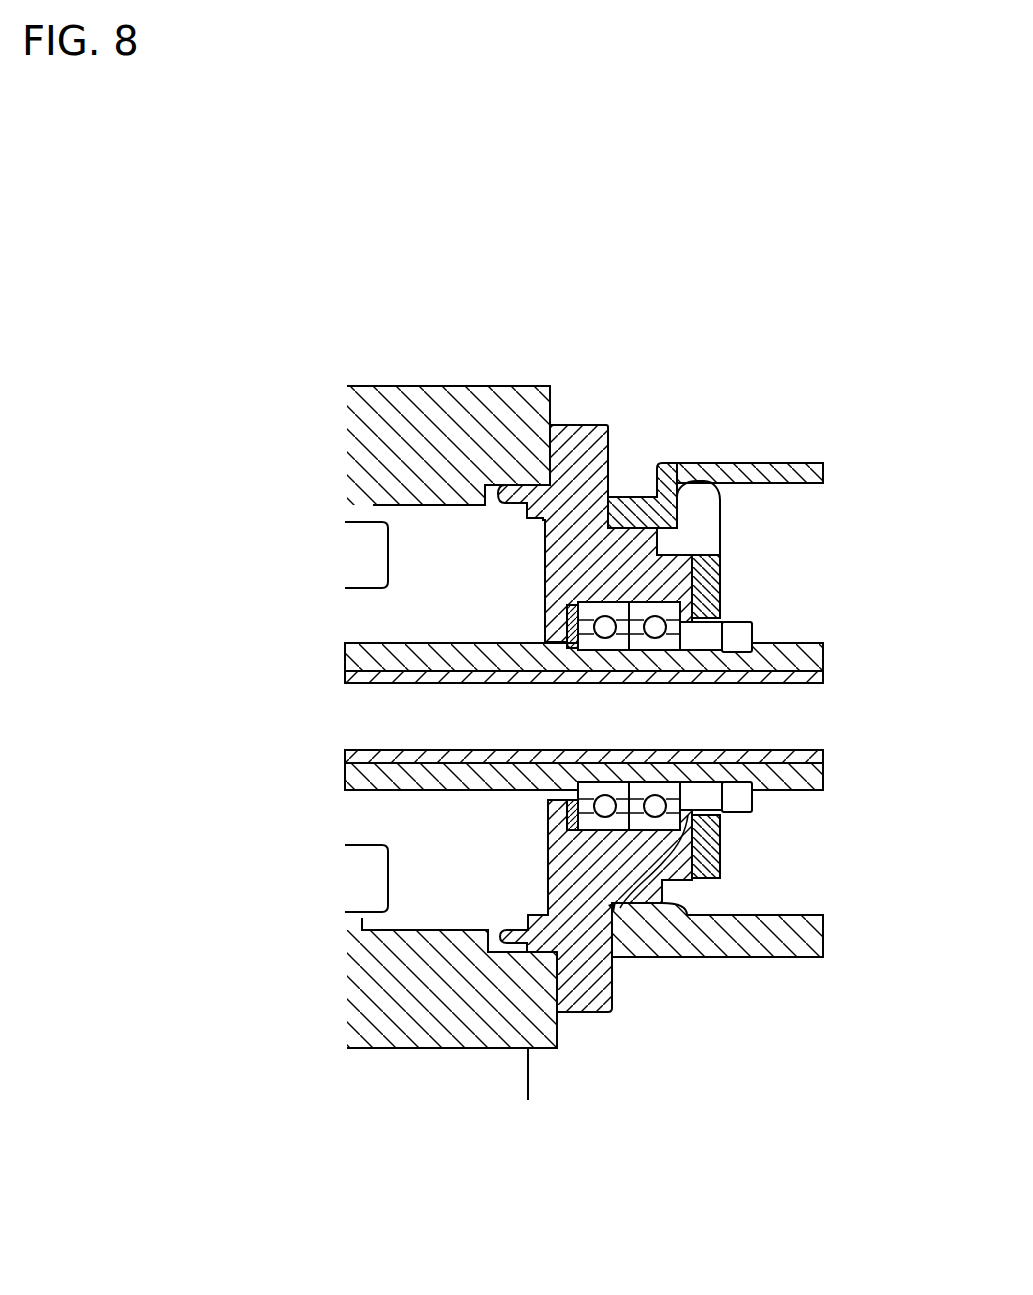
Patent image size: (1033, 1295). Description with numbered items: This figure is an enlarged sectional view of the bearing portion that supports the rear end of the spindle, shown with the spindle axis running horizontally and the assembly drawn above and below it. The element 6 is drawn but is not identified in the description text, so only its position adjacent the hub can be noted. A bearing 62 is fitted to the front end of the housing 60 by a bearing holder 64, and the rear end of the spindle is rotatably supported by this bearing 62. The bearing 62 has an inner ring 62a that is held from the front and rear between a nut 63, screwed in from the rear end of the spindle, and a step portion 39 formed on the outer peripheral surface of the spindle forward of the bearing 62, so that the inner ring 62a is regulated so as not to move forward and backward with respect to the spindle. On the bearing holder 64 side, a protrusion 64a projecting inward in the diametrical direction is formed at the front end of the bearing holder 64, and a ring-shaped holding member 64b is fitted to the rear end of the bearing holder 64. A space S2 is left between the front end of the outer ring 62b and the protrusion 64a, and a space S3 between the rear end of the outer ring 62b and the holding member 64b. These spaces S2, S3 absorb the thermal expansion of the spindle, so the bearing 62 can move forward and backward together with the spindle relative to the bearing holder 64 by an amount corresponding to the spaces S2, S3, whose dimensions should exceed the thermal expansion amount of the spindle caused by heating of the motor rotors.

The rotor 6 is at (335, 428).
The step portion 39 is at (603, 765).
The housing 60 is at (815, 455).
The bearing 62 is at (618, 598).
The inner ring 62a is at (652, 643).
The outer ring 62b is at (548, 480).
The nut 63 is at (740, 808).
The bearing holder 64 is at (597, 418).
The protrusion 64a is at (545, 632).
The holding member 64b is at (680, 463).
The space S2 is at (572, 816).
The space S3 is at (620, 908).